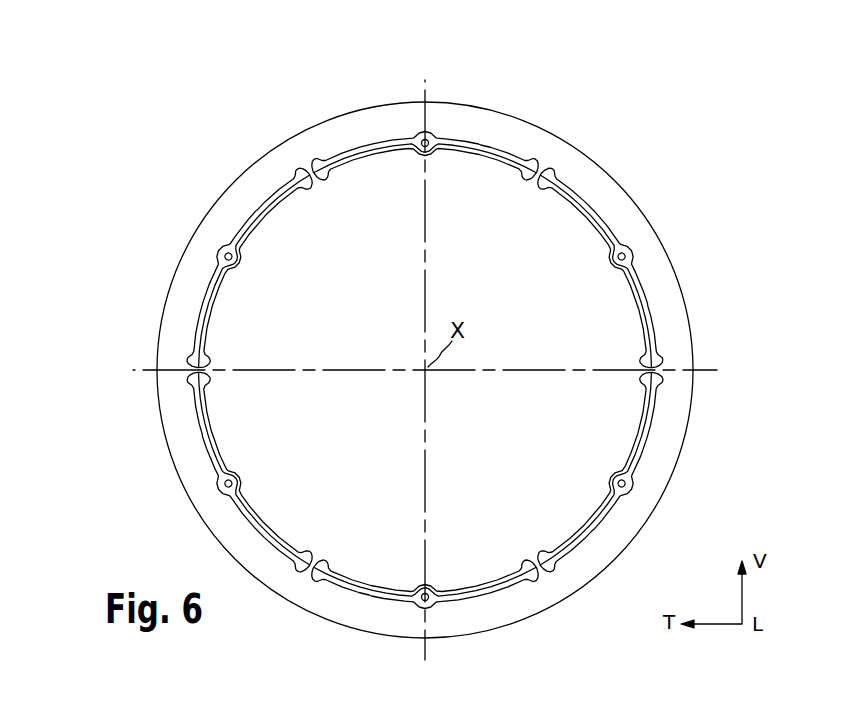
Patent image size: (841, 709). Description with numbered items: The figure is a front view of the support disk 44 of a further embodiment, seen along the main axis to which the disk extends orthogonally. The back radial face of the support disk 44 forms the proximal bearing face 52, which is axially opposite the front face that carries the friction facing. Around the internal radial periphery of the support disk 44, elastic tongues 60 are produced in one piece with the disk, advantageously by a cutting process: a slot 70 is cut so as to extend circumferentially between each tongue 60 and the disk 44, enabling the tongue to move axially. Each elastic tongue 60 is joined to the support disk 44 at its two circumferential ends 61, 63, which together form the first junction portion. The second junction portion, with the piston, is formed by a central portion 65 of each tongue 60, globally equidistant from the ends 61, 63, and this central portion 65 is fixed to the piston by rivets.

The support disk 44 is at (588, 195).
The proximal bearing face 52 is at (395, 330).
The elastic tongue 60 is at (368, 166).
The circumferential end 61 is at (190, 362).
The circumferential end 63 is at (221, 224).
The central portion 65 is at (428, 149).
The slot 70 is at (213, 285).